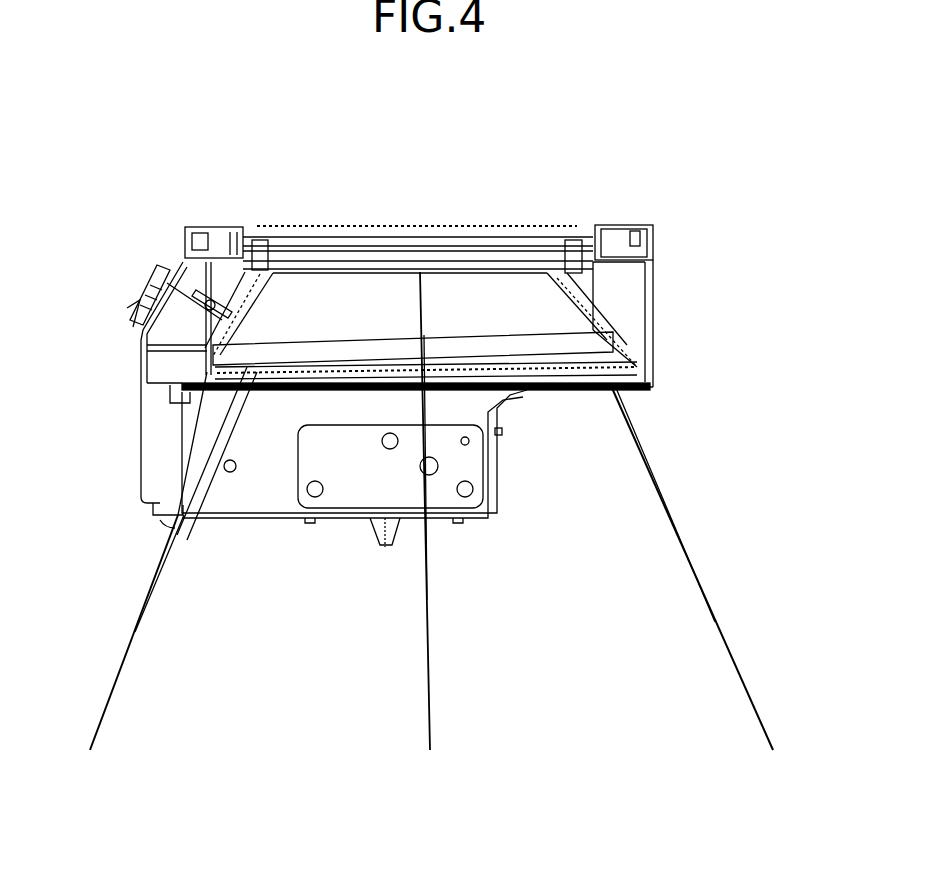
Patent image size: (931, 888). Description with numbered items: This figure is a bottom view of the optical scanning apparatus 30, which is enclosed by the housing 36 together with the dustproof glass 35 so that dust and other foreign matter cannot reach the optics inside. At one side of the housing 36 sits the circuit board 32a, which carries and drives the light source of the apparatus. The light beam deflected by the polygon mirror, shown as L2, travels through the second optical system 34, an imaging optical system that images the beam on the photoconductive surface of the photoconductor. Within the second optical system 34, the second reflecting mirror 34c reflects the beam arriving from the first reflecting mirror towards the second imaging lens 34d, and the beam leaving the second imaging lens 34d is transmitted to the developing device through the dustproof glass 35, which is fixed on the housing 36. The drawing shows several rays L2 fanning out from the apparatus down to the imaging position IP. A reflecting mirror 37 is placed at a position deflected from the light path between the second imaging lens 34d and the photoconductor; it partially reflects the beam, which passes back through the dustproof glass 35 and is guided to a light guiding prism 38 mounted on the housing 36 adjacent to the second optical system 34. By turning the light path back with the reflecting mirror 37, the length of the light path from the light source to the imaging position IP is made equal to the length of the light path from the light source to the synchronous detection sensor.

The optical scanning apparatus 30 is at (663, 227).
The circuit board 32a is at (147, 292).
The second optical system 34 is at (360, 223).
The second reflecting mirror 34c is at (442, 255).
The second imaging lens 34d is at (455, 350).
The dustproof glass 35 is at (555, 393).
The housing 36 is at (625, 310).
The reflecting mirror 37 is at (167, 520).
The light guiding prism 38 is at (210, 305).
The light beam deflected by the polygon mirror L2 is at (187, 440).
The imaging position IP is at (65, 750).